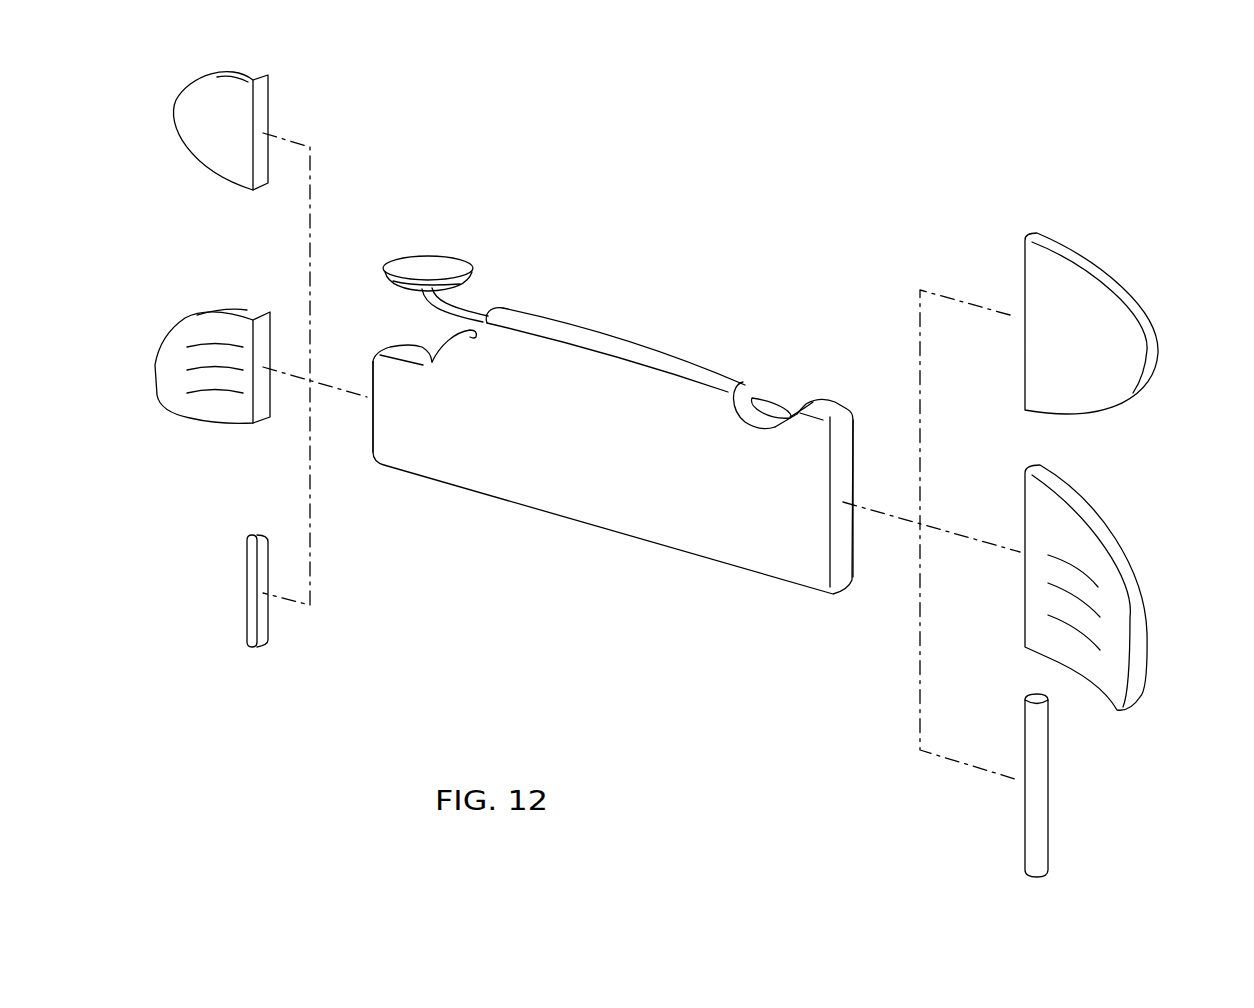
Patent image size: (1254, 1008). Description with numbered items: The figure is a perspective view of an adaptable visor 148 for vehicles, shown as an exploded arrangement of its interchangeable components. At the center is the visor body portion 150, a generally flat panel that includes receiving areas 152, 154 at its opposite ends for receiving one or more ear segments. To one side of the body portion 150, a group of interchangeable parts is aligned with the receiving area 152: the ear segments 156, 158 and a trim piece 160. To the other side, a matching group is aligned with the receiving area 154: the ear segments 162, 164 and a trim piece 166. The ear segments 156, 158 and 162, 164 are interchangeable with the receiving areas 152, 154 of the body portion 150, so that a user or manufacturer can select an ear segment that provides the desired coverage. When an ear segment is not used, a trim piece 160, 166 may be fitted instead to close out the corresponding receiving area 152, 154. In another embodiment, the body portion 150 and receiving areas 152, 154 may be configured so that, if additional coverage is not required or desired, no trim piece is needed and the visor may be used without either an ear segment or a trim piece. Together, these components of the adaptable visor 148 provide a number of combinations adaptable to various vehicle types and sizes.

The adaptable visor 148 is at (750, 239).
The visor body portion 150 is at (617, 458).
The receiving area 152 is at (374, 489).
The receiving area 154 is at (840, 616).
The ear segment 156 is at (190, 108).
The ear segment 158 is at (183, 337).
The trim piece 160 is at (258, 560).
The ear segment 162 is at (1102, 300).
The ear segment 164 is at (1090, 550).
The trim piece 166 is at (1040, 755).